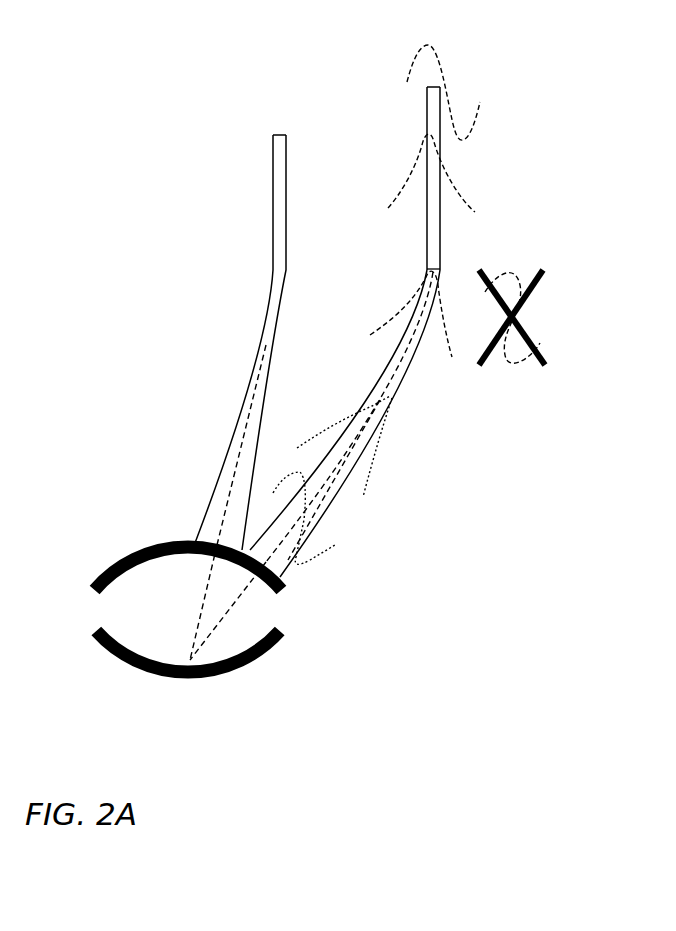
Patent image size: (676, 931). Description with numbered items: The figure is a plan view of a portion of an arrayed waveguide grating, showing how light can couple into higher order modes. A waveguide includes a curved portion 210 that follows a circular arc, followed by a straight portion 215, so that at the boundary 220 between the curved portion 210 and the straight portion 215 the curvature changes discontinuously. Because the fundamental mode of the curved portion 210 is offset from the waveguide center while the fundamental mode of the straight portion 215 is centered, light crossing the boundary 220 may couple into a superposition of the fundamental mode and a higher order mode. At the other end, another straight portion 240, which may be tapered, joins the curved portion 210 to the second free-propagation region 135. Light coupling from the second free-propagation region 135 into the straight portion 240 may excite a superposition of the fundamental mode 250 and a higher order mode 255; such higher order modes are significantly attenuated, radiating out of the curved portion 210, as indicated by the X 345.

The second free-propagation region 135 is at (97, 533).
The curved portion 210 is at (403, 222).
The straight portion 215 is at (396, 90).
The boundary 220 is at (441, 224).
The straight portion 240 is at (403, 412).
The fundamental mode 250 is at (345, 428).
The higher order mode 255 is at (284, 480).
The X 345 is at (540, 283).